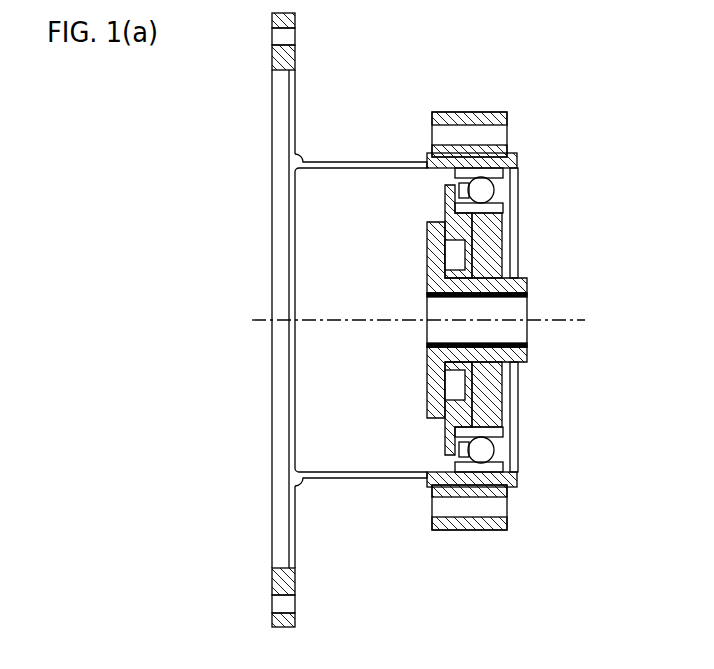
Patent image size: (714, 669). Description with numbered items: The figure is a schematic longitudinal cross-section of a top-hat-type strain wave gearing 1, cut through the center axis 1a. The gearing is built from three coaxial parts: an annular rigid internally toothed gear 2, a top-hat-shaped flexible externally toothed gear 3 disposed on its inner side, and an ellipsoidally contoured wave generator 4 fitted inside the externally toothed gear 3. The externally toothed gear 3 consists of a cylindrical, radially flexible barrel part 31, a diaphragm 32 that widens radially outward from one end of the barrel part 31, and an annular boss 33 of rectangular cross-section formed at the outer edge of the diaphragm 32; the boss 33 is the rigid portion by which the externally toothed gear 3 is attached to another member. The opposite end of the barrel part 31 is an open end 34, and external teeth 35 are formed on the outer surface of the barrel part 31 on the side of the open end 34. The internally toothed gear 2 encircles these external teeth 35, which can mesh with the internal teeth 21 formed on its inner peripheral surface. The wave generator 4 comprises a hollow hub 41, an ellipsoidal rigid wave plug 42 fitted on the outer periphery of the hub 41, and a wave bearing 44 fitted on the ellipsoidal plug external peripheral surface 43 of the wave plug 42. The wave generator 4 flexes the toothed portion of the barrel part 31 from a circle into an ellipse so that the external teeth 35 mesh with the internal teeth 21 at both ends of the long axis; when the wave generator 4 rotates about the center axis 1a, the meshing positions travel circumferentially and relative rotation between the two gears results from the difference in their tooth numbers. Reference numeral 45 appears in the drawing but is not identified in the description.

The strain wave gearing 1 is at (434, 80).
The center axis 1a is at (340, 314).
The internally toothed gear 2 is at (513, 144).
The internal teeth 21 is at (505, 186).
The externally toothed gear 3 is at (381, 160).
The barrel part 31 is at (375, 479).
The diaphragm 32 is at (296, 532).
The boss 33 is at (296, 583).
The wave generator 4 is at (515, 261).
The hollow hub 41 is at (518, 348).
The wave plug 42 is at (498, 395).
The plug external peripheral surface 43 is at (495, 442).
The wave bearing 44 is at (504, 457).
The inner ring 45 is at (478, 423).
The open end 34 is at (518, 476).
The external teeth 35 is at (472, 491).